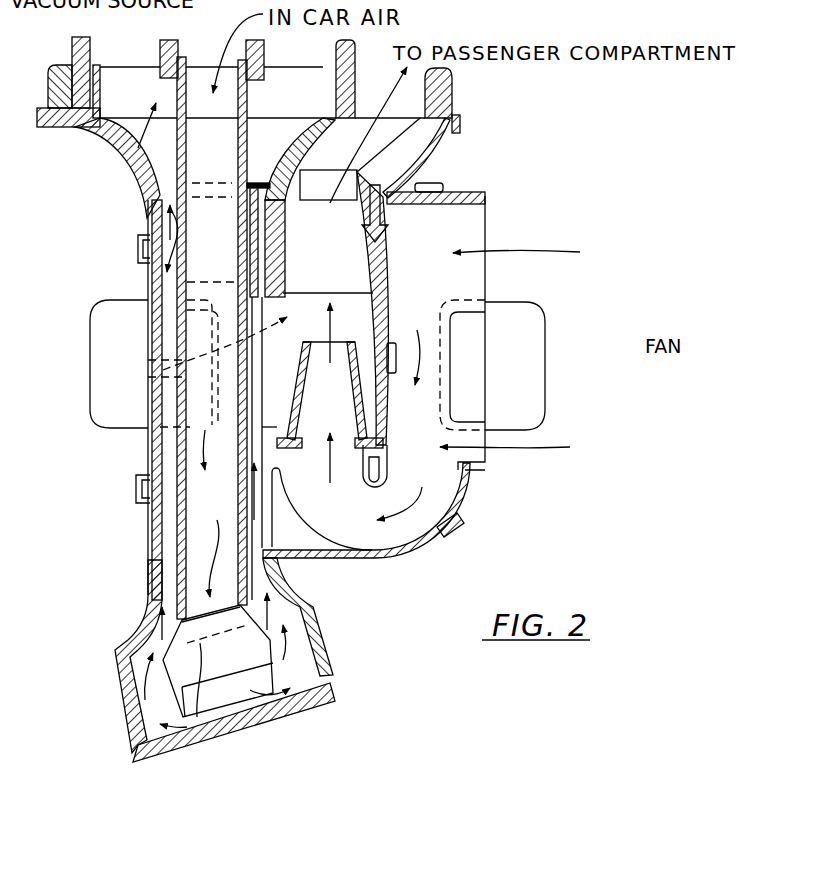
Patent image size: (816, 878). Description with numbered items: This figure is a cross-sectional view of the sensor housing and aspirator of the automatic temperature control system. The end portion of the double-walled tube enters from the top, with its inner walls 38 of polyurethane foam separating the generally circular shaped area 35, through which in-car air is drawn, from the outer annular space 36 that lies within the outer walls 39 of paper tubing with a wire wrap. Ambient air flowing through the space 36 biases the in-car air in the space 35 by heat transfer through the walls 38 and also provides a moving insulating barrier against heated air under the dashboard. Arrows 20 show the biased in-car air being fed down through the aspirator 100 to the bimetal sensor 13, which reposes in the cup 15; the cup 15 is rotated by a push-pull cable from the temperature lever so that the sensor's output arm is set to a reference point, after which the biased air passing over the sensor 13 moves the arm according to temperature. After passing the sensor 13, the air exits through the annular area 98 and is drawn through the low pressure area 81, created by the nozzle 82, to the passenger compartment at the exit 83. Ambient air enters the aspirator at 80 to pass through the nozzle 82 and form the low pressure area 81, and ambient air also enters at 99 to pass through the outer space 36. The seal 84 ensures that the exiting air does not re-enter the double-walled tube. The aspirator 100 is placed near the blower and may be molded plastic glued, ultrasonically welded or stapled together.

The bimetal sensor 13 is at (263, 693).
The cup 15 is at (300, 718).
The arrows 20 is at (207, 220).
The generally circular shaped area 35 is at (197, 78).
The outer annular space 36 is at (136, 75).
The inner walls 38 is at (170, 42).
The outer walls 39 is at (80, 42).
The ambient air inlet 80 is at (559, 355).
The low pressure area 81 is at (310, 310).
The nozzle 82 is at (342, 413).
The exit 83 is at (383, 90).
The seal 84 is at (150, 233).
The annular area 98 is at (140, 661).
The ambient air inlet to outer space 99 is at (128, 156).
The aspirator housing 100 is at (402, 556).